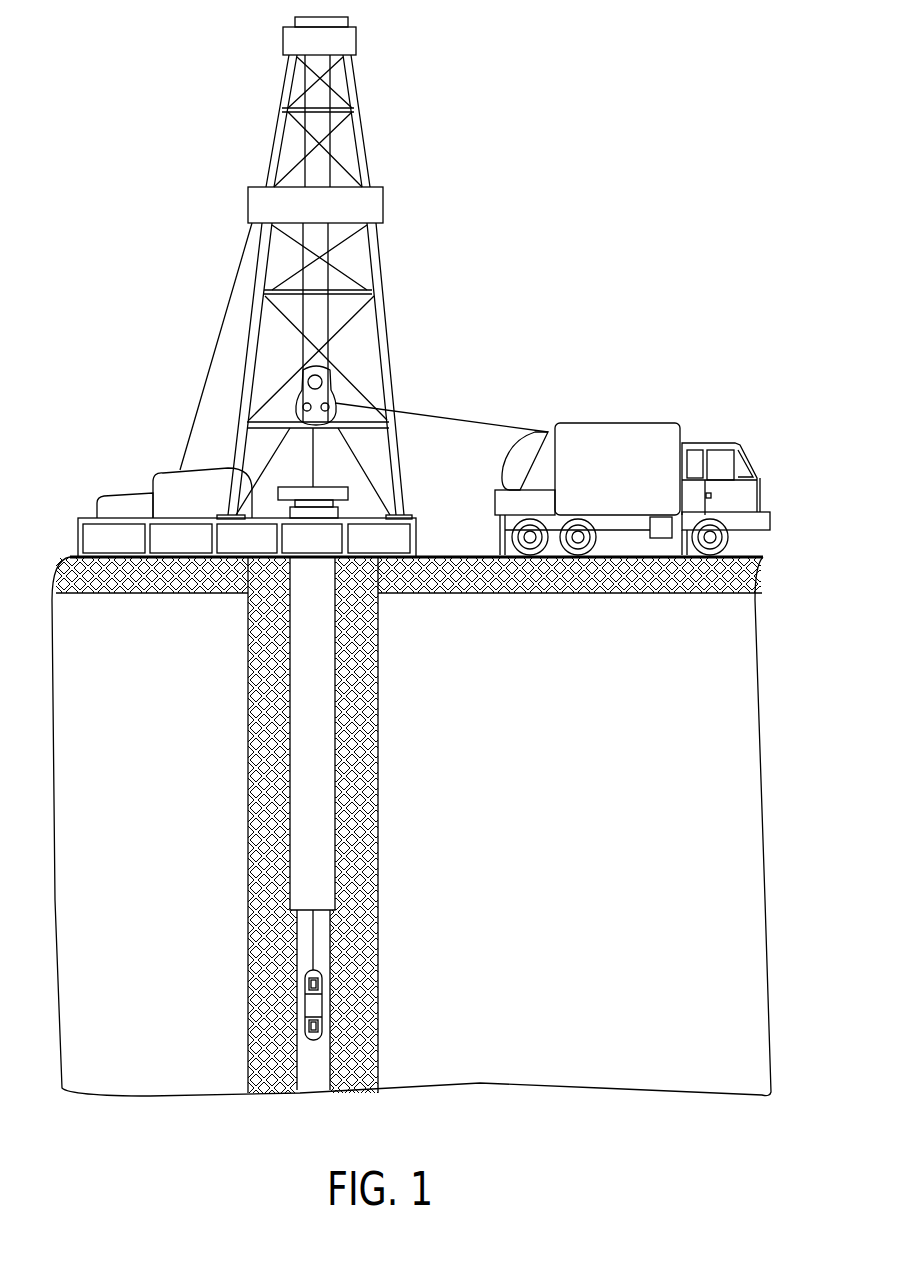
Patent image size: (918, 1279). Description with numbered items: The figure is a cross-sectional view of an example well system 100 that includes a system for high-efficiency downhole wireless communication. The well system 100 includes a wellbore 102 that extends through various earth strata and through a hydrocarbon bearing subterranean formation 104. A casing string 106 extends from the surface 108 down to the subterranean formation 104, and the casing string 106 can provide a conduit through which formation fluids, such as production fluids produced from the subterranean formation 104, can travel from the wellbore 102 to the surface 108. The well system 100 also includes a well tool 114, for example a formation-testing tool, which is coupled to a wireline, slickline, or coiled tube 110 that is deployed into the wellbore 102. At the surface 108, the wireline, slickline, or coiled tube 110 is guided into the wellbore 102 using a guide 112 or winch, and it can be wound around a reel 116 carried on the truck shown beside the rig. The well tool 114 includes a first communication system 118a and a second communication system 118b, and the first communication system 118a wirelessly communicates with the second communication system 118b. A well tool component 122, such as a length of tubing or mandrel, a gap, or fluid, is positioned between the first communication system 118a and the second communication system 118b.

The well system 100 is at (555, 150).
The wellbore 102 is at (337, 810).
The subterranean formation 104 is at (405, 702).
The casing string 106 is at (302, 825).
The surface 108 is at (347, 487).
The wireline, slickline, or coiled tube 110 is at (454, 419).
The guide 112 is at (326, 380).
The well tool 114 is at (318, 980).
The reel 116 is at (541, 430).
The first communication system 118a is at (318, 985).
The second communication system 118b is at (320, 1028).
The well tool component 122 is at (308, 1007).